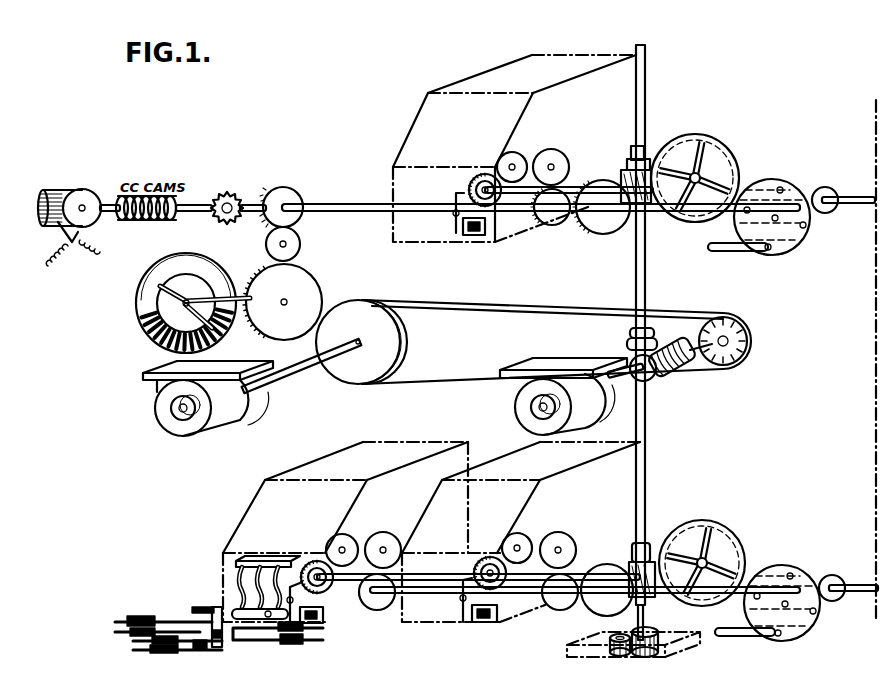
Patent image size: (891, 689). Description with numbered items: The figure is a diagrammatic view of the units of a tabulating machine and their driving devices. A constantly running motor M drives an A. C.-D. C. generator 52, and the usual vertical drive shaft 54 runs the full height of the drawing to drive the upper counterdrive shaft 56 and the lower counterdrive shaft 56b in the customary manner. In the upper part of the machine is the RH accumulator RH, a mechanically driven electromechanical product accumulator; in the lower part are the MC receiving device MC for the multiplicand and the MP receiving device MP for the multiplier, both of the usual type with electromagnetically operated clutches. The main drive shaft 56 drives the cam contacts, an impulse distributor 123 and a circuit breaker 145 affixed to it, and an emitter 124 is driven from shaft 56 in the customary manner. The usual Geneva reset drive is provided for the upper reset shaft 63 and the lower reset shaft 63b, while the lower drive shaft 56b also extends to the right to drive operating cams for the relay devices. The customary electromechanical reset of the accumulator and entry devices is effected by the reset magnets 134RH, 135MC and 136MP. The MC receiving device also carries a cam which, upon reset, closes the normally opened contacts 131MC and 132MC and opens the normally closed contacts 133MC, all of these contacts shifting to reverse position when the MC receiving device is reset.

The impulse distributor 123 is at (72, 193).
The circuit breaker 145 is at (232, 193).
The upper counterdrive shaft 56 is at (338, 210).
The upper reset shaft 63 is at (568, 187).
The reset magnet 134RH is at (474, 235).
The vertical drive shaft 54 is at (648, 280).
The emitter 124 is at (146, 291).
The motor M is at (241, 402).
The A. C.-D. C. generator 52 is at (527, 398).
The normally opened contacts 131MC is at (193, 622).
The normally opened contacts 132MC is at (234, 638).
The normally closed contacts 133MC is at (193, 653).
The reset magnet 135MC is at (323, 622).
The lower reset shaft 63b is at (345, 582).
The reset magnet 136MP is at (486, 612).
The lower counterdrive shaft 56b is at (527, 592).
The RH accumulator RH is at (514, 148).
The MC receiving device MC is at (345, 532).
The MP receiving device MP is at (521, 532).